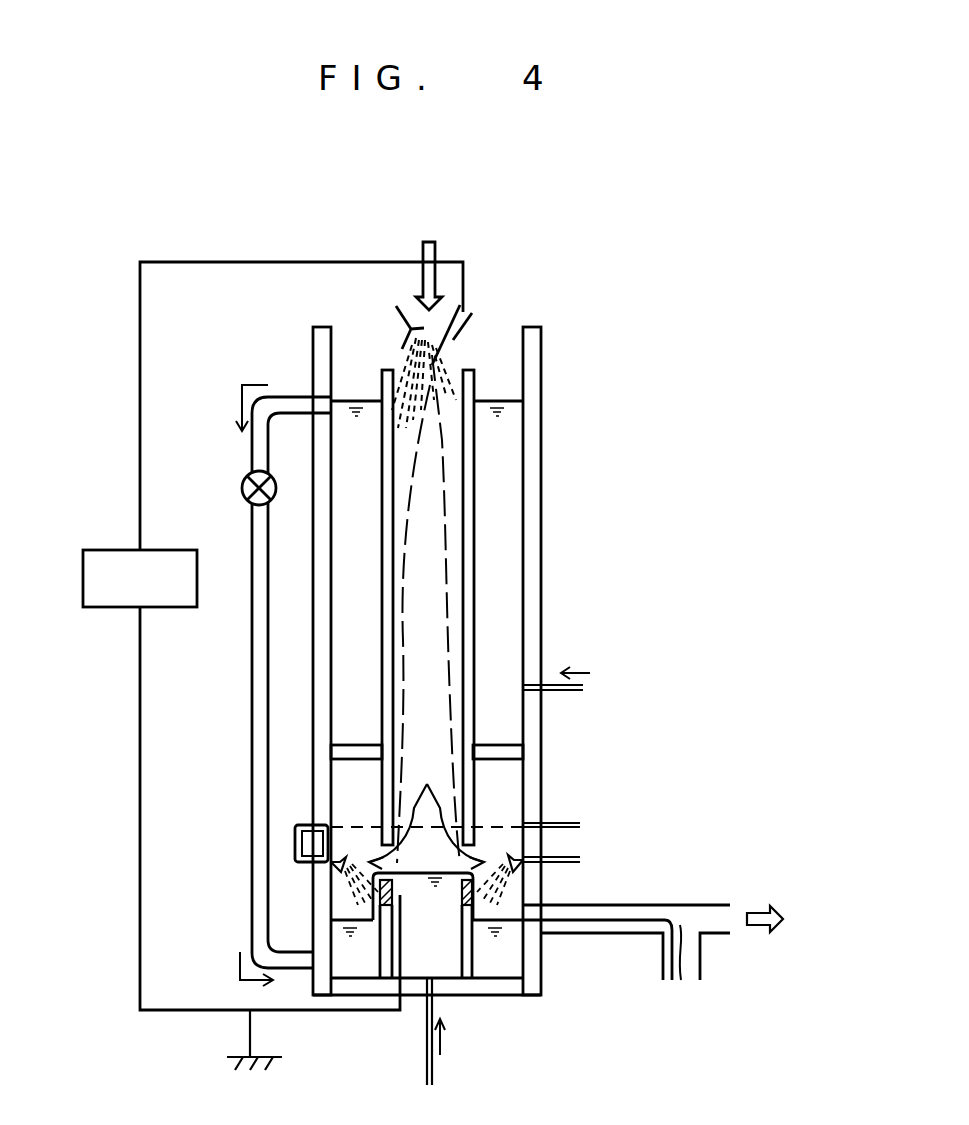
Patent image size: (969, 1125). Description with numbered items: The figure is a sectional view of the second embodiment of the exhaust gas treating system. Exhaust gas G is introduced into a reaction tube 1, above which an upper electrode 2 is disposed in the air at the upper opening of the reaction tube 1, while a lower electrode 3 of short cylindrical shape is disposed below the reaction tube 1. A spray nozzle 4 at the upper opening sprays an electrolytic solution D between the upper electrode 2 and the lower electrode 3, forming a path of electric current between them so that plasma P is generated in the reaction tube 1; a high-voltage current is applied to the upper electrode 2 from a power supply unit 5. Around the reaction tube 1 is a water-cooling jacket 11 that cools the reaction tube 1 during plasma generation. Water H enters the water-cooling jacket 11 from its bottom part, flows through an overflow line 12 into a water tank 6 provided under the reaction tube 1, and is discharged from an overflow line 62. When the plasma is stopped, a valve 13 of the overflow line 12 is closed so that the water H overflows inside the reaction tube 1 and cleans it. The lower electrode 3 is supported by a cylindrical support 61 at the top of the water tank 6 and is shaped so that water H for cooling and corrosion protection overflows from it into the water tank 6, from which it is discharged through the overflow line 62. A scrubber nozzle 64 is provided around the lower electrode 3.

The reaction tube 1 is at (468, 448).
The upper electrode 2 is at (468, 322).
The lower electrode 3 is at (453, 893).
The spray nozzle 4 is at (399, 320).
The power supply unit 5 is at (100, 563).
The water tank 6 is at (353, 962).
The water-cooling jacket 11 is at (512, 482).
The overflow line 12 is at (258, 531).
The valve 13 is at (243, 490).
The cylindrical support 61 is at (383, 957).
The overflow line 62 is at (672, 905).
The scrubber nozzle 64 is at (340, 862).
The exhaust gas G is at (430, 244).
The electrolytic solution D is at (455, 370).
The plasma P is at (447, 543).
The water H is at (505, 600).